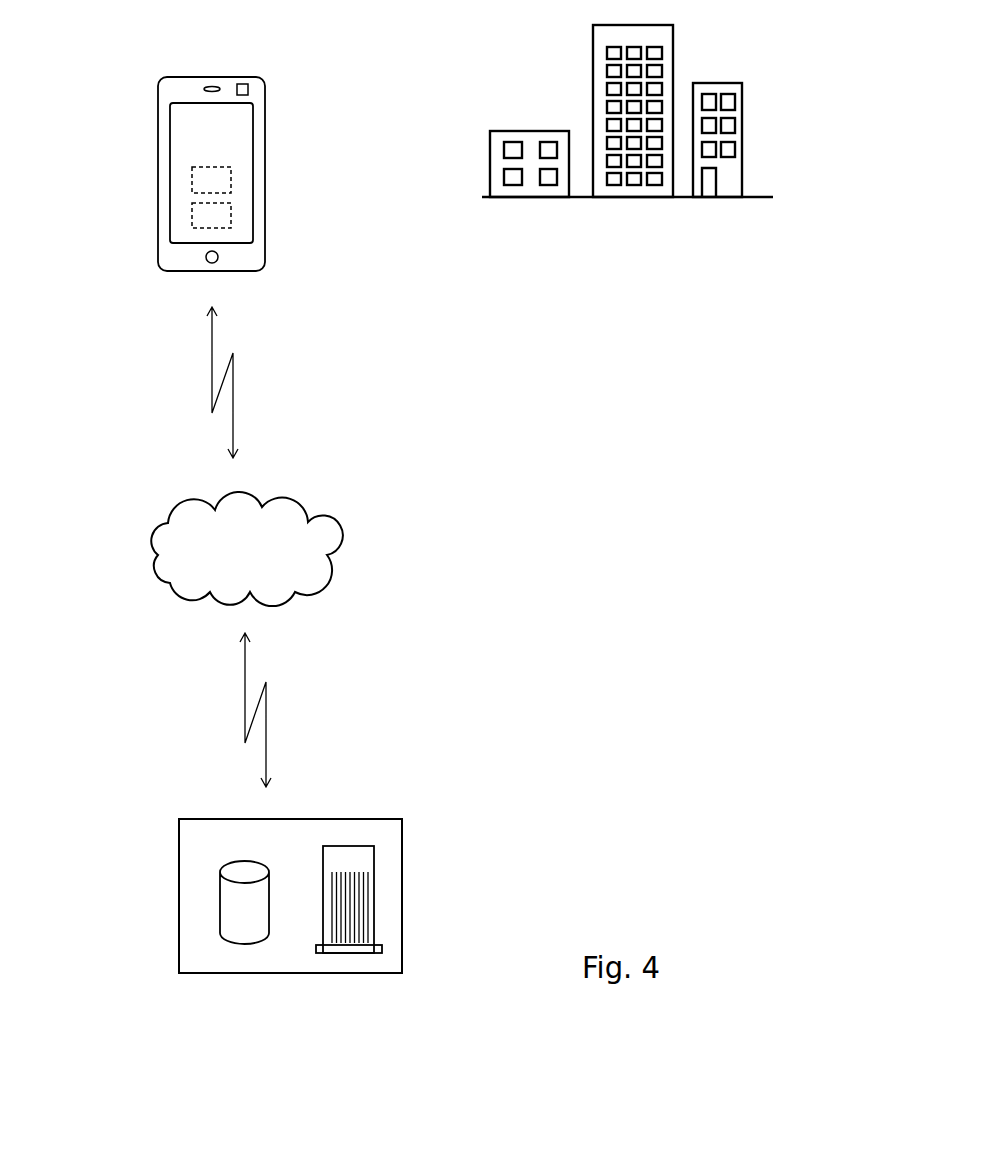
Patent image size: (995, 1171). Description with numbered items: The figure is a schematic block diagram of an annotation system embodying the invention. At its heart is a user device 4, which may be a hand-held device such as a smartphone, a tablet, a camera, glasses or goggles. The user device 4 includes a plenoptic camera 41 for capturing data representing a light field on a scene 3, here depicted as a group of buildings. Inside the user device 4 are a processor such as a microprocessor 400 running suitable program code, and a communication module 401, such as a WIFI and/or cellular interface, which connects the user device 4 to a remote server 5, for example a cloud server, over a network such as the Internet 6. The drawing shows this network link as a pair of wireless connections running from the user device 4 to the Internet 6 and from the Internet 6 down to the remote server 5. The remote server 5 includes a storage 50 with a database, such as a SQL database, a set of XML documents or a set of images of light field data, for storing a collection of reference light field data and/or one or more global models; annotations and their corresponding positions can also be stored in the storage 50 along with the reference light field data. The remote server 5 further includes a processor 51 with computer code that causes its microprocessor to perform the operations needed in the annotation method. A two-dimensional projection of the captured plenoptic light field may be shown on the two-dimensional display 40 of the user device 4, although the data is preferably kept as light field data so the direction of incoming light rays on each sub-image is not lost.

The scene 3 is at (531, 250).
The user device 4 is at (104, 215).
The 2D display 40 is at (247, 128).
The plenoptic camera 41 is at (250, 88).
The microprocessor 400 is at (224, 217).
The communication module 401 is at (224, 182).
The remote server 5 is at (104, 929).
The storage 50 is at (260, 923).
The processor 51 is at (365, 860).
The Internet 6 is at (232, 562).